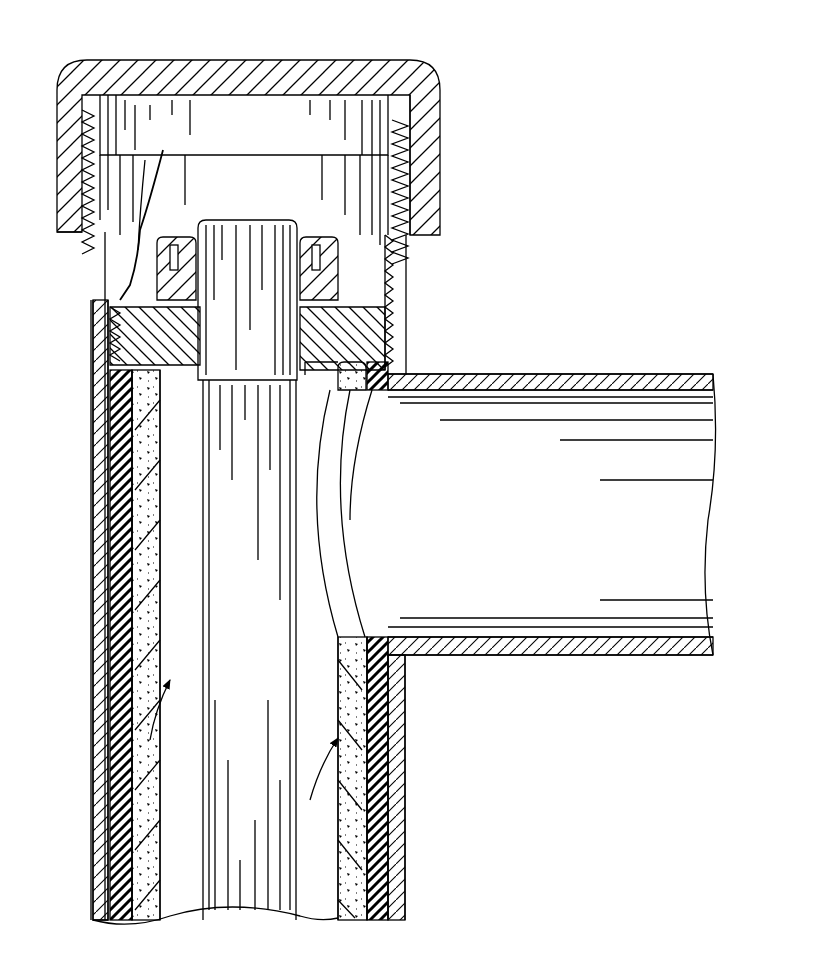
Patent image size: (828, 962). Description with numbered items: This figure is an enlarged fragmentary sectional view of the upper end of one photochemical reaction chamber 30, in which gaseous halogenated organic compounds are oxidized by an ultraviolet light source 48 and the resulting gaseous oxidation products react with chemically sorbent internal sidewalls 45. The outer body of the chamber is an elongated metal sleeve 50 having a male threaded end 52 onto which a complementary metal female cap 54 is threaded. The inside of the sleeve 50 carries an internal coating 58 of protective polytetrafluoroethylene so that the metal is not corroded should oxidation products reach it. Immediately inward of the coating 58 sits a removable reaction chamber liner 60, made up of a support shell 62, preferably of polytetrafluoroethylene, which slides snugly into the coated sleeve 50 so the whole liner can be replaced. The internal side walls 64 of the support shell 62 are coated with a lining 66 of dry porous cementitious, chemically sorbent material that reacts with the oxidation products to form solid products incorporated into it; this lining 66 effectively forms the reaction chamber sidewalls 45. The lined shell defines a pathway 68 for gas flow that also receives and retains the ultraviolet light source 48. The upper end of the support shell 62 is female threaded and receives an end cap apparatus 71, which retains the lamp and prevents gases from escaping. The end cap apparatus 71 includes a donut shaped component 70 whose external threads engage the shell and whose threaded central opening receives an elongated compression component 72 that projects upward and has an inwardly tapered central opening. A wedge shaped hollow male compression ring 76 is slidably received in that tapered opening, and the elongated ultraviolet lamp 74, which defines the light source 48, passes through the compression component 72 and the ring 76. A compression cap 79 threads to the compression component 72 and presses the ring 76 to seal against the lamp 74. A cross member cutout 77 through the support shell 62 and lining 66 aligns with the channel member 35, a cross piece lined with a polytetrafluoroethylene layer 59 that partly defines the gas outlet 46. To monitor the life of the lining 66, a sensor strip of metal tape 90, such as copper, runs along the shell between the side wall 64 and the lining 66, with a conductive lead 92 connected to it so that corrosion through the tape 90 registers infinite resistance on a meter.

The reaction chamber 30 is at (488, 138).
The channel member 35 is at (582, 385).
The internal sidewalls 45 is at (244, 735).
The gas outlet 46 is at (388, 470).
The ultraviolet light source 48 is at (262, 215).
The sleeve 50 is at (95, 632).
The male threaded end 52 is at (88, 250).
The female cap 54 is at (425, 130).
The internal coating 58 is at (410, 200).
The polytetrafluoroethylene layer 59 is at (640, 385).
The removable reaction chamber liner 60 is at (78, 200).
The support shell 62 is at (110, 375).
The internal side walls 64 is at (180, 598).
The lining 66 is at (135, 425).
The pathway 68 is at (175, 766).
The donut shaped component 70 is at (330, 382).
The end cap apparatus 71 is at (420, 226).
The compression component 72 is at (395, 290).
The ultraviolet lamp 74 is at (236, 235).
The compression ring 76 is at (312, 245).
The cross member cutout 77 is at (358, 445).
The compression cap 79 is at (172, 240).
The metal tape 90 is at (100, 500).
The lead 92 is at (128, 300).